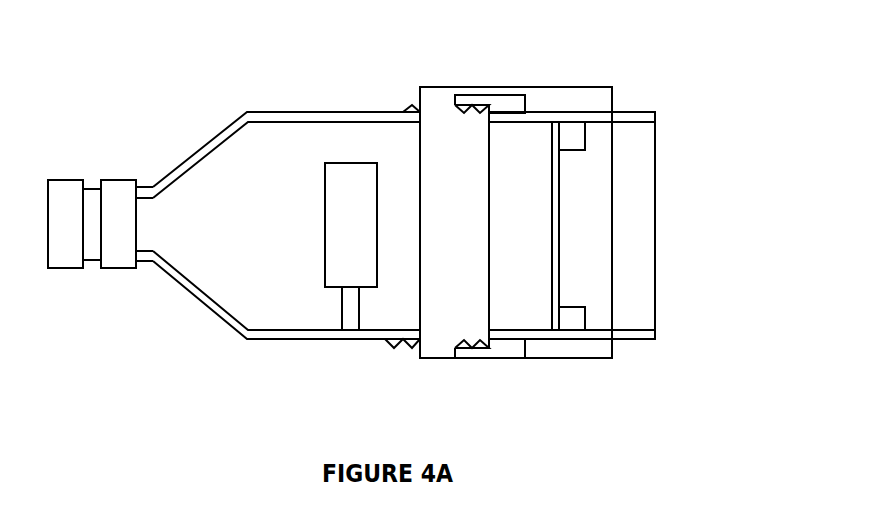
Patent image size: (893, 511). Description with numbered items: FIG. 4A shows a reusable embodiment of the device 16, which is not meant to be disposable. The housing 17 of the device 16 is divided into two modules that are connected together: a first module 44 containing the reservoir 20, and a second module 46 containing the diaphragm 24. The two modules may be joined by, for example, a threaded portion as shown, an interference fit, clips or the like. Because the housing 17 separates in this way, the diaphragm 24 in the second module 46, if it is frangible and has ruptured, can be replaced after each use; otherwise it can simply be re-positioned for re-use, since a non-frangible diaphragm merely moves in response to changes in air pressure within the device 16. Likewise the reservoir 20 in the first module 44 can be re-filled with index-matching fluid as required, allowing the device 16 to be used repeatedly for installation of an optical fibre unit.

The device 16 is at (650, 95).
The housing 17 is at (320, 112).
The reservoir 20 is at (343, 265).
The diaphragm 24 is at (557, 220).
The first module 44 is at (315, 340).
The second module 46 is at (628, 343).